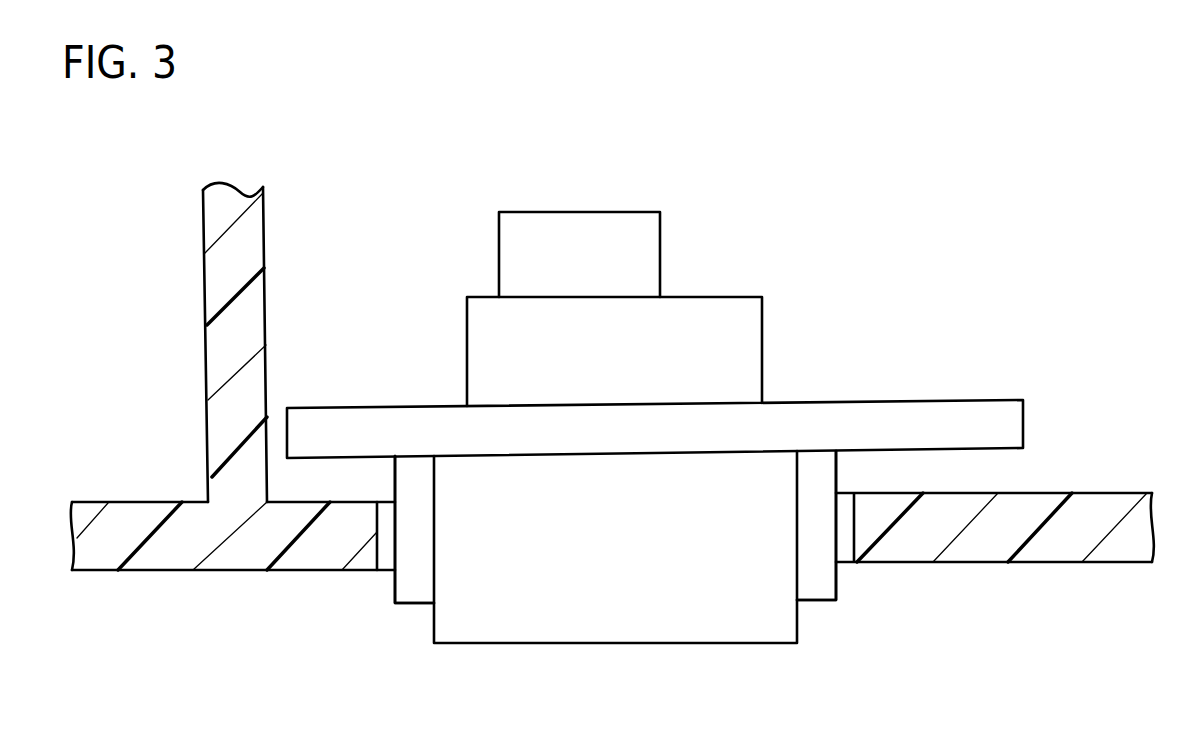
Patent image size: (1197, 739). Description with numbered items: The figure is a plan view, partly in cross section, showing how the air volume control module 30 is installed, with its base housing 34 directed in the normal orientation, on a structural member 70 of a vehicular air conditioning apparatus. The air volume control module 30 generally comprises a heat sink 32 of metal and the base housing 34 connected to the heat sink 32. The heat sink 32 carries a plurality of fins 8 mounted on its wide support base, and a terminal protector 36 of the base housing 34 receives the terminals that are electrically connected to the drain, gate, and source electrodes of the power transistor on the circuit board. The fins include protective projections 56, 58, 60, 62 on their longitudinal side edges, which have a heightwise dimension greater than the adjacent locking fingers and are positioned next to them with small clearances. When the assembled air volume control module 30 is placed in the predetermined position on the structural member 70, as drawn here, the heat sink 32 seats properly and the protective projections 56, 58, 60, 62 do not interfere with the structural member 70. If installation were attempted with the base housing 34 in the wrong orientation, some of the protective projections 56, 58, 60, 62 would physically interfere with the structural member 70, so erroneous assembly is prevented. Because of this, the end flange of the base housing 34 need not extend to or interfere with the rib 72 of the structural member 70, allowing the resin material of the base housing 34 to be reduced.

The fins 8 is at (562, 633).
The air volume control module 30 is at (407, 297).
The heat sink 32 is at (713, 627).
The base housing 34 is at (956, 418).
The terminal protector 36 is at (618, 223).
The protective projection 56 is at (418, 594).
The protective projection 58 is at (414, 529).
The protective projection 60 is at (812, 590).
The protective projection 62 is at (816, 525).
The structural member 70 is at (237, 556).
The rib 72 is at (203, 278).